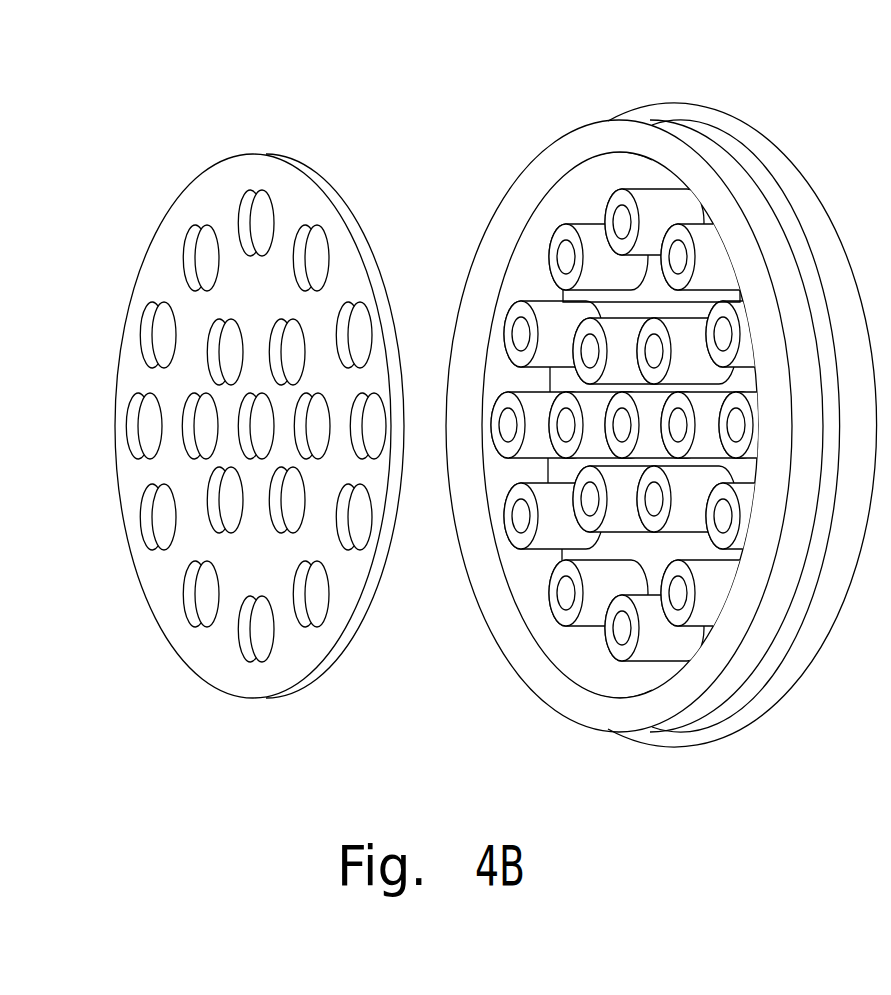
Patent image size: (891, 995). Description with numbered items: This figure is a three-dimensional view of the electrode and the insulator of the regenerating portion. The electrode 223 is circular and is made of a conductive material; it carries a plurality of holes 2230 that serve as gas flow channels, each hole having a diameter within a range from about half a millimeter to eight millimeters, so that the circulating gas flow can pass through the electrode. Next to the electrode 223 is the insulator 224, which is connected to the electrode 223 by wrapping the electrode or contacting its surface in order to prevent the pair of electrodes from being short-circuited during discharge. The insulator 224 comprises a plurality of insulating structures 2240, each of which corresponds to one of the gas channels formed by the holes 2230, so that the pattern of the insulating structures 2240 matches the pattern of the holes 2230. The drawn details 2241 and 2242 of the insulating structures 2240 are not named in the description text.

The electrode 223 is at (224, 387).
The holes 2230 is at (215, 424).
The insulator 224 is at (661, 383).
The insulating structures 2240 is at (636, 377).
The tube holes 2241 is at (600, 383).
The connecting portions 2242 is at (644, 425).